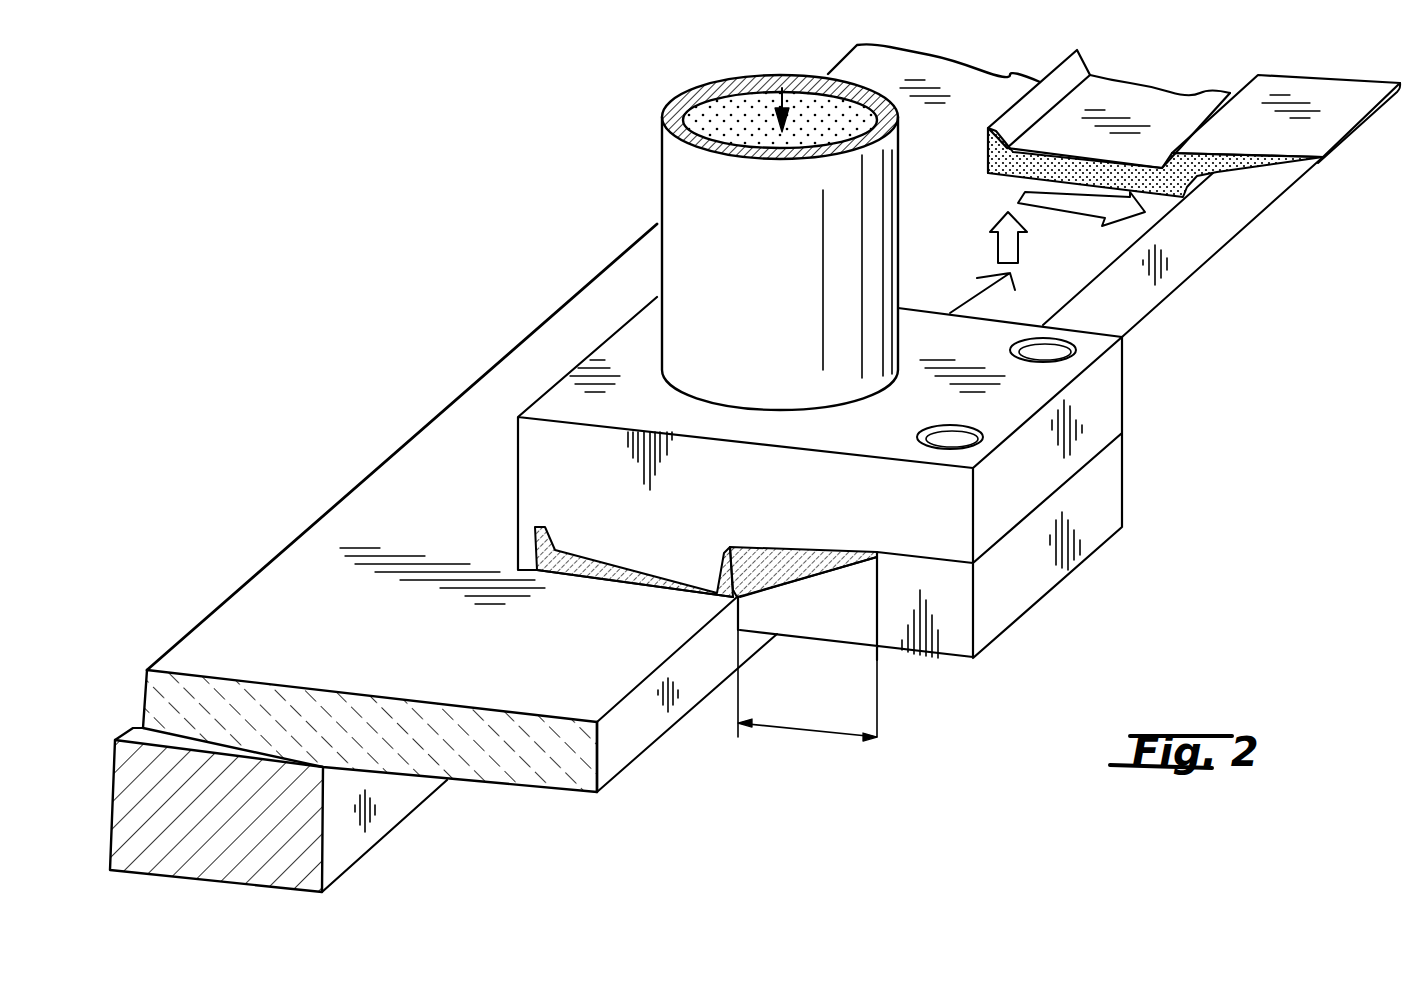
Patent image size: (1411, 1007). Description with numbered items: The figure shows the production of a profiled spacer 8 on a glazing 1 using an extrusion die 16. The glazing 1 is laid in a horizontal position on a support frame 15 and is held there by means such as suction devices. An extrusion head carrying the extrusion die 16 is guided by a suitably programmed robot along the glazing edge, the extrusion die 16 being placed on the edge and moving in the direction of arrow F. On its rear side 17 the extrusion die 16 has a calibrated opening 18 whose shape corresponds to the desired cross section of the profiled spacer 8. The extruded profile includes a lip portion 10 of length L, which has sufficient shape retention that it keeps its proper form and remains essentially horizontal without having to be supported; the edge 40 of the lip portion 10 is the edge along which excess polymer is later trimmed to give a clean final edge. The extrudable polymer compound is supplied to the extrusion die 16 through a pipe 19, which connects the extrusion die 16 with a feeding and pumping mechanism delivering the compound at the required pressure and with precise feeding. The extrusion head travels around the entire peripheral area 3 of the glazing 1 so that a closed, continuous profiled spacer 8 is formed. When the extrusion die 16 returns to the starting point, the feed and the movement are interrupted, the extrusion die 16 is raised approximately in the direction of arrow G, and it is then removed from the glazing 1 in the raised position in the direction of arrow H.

The glazing 1 is at (543, 777).
The peripheral area 3 is at (628, 748).
The profiled spacer 8 is at (643, 587).
The lip portion 10 is at (807, 550).
The support frame 15 is at (393, 820).
The extrusion die 16 is at (584, 358).
The rear side 17 is at (552, 477).
The calibrated opening 18 is at (650, 563).
The pipe 19 is at (678, 197).
The edge of lip portion 40 is at (1340, 147).
The arrow G is at (1002, 247).
The arrow H is at (1070, 203).
The arrow F is at (993, 298).
The length L is at (822, 728).